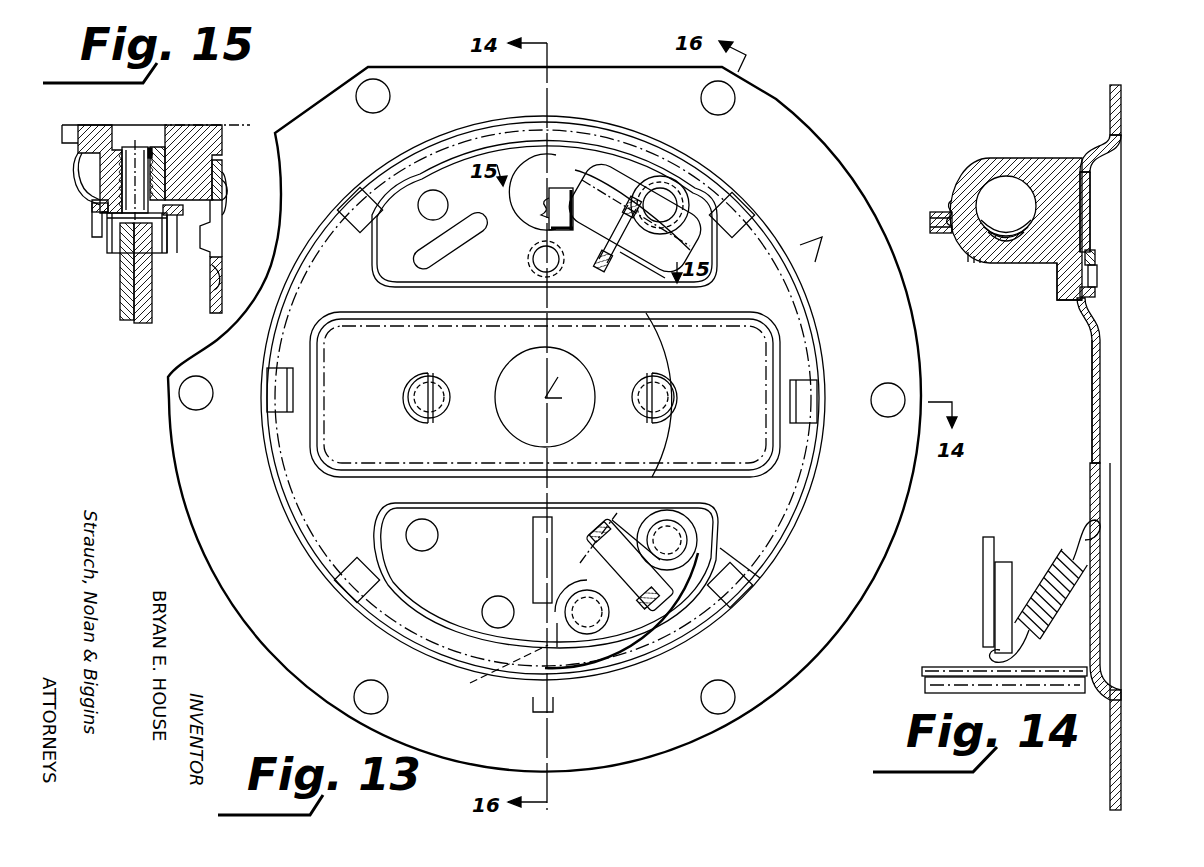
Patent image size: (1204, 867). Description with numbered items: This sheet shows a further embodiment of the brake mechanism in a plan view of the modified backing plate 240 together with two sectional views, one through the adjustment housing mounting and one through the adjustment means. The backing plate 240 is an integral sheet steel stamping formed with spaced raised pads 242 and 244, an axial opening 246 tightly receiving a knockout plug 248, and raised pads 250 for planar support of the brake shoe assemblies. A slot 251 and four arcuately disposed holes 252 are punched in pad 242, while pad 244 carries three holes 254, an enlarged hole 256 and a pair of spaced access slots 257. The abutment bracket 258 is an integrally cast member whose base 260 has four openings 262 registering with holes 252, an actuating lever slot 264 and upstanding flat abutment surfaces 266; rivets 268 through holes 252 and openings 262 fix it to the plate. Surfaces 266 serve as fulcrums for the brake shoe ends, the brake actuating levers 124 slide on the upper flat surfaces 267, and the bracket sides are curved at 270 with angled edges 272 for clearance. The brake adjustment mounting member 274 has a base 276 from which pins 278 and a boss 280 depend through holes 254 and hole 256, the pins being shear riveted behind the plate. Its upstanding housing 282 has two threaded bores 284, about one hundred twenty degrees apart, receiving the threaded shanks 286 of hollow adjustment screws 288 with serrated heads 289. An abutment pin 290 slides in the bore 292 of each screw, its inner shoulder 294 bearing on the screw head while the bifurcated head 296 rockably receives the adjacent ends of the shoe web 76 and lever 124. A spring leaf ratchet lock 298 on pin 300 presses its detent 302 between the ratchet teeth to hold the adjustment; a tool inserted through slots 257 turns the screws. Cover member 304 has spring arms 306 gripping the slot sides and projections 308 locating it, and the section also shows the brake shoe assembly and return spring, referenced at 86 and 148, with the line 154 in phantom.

In FIG. 14, the web 76 is at (1003, 560).
In FIG. 15, the web 76 is at (150, 300).
In FIG. 14, the support bracket 86 is at (920, 681).
In FIG. 13, the brake actuating lever 124 is at (656, 450).
In FIG. 14, the brake actuating lever 124 is at (984, 572).
In FIG. 15, the brake actuating lever 124 is at (121, 302).
In FIG. 14, the tension spring 148 is at (1037, 550).
In FIG. 13, the pivot axis 154 is at (509, 676).
In FIG. 13, the backing plate 240 is at (657, 747).
In FIG. 14, the backing plate 240 is at (1113, 720).
In FIG. 13, the raised pad 242 is at (372, 527).
In FIG. 13, the raised pad 244 is at (377, 276).
In FIG. 14, the raised pad 244 is at (1080, 312).
In FIG. 13, the axial opening 246 is at (500, 386).
In FIG. 14, the axial opening 246 is at (1103, 453).
In FIG. 13, the knockout plug 248 is at (545, 421).
In FIG. 14, the knockout plug 248 is at (1088, 435).
In FIG. 13, the raised pads 250 is at (352, 205).
In FIG. 13, the slot 251 is at (533, 546).
In FIG. 13, the holes 252 is at (492, 603).
In FIG. 13, the holes 254 is at (427, 218).
In FIG. 14, the holes 254 is at (1093, 270).
In FIG. 13, the enlarged hole 256 is at (505, 195).
In FIG. 14, the enlarged hole 256 is at (1090, 173).
In FIG. 13, the slots 257 is at (456, 248).
In FIG. 15, the slots 257 is at (223, 176).
In FIG. 13, the abutment bracket 258 is at (640, 605).
In FIG. 13, the base 260 is at (572, 660).
In FIG. 13, the openings 262 is at (678, 520).
In FIG. 13, the actuating lever slot 264 is at (552, 540).
In FIG. 13, the abutment surfaces 266 is at (628, 528).
In FIG. 13, the upper flat surfaces 267 is at (742, 563).
In FIG. 13, the rivets 268 is at (690, 540).
In FIG. 13, the arcuately curved sides 270 is at (656, 599).
In FIG. 13, the angled edges 272 is at (597, 522).
In FIG. 13, the brake adjustment mounting member 274 is at (612, 173).
In FIG. 14, the brake adjustment mounting member 274 is at (1005, 157).
In FIG. 14, the base 276 is at (1060, 295).
In FIG. 13, the pins 278 is at (541, 262).
In FIG. 14, the pins 278 is at (1097, 282).
In FIG. 14, the boss 280 is at (1090, 227).
In FIG. 15, the boss 280 is at (225, 143).
In FIG. 13, the housing 282 is at (576, 160).
In FIG. 14, the housing 282 is at (990, 267).
In FIG. 15, the housing 282 is at (217, 125).
In FIG. 13, the threaded bores 284 is at (660, 205).
In FIG. 14, the threaded bores 284 is at (995, 183).
In FIG. 15, the threaded bores 284 is at (107, 125).
In FIG. 15, the threaded shank 286 is at (167, 148).
In FIG. 13, the adjustment screw 288 is at (638, 196).
In FIG. 15, the adjustment screw 288 is at (92, 208).
In FIG. 15, the serrated head 289 is at (183, 211).
In FIG. 15, the abutment pin 290 is at (136, 147).
In FIG. 15, the bore 292 is at (150, 150).
In FIG. 15, the inner shoulder 294 is at (172, 232).
In FIG. 13, the bifurcated head 296 is at (643, 320).
In FIG. 15, the bifurcated head 296 is at (117, 233).
In FIG. 13, the spring leaf ratchet lock 298 is at (547, 238).
In FIG. 14, the spring leaf ratchet lock 298 is at (950, 203).
In FIG. 15, the spring leaf ratchet lock 298 is at (90, 186).
In FIG. 13, the pin 300 is at (552, 206).
In FIG. 14, the pin 300 is at (930, 212).
In FIG. 13, the detent 302 is at (603, 270).
In FIG. 15, the detent 302 is at (92, 230).
In FIG. 15, the cover member 304 is at (222, 277).
In FIG. 15, the spring arms 306 is at (215, 230).
In FIG. 15, the projections 308 is at (220, 207).